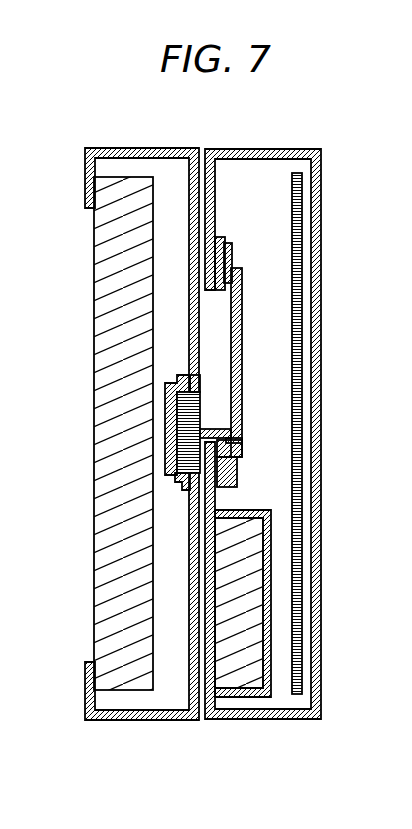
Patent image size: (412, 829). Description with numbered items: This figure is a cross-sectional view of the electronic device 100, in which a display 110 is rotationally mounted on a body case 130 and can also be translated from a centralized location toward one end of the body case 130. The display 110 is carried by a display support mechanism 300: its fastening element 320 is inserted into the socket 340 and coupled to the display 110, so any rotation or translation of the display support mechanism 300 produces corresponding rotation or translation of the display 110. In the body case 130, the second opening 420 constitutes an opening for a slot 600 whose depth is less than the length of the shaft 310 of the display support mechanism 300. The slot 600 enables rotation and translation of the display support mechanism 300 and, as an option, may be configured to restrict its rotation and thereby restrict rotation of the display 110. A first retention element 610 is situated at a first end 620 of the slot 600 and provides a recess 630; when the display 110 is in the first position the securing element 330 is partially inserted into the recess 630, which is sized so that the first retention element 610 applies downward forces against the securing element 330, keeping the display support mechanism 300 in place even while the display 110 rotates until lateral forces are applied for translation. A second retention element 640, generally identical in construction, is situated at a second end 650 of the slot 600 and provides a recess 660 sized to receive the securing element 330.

The electronic device 100 is at (218, 748).
The display 110 is at (135, 147).
The body case 130 is at (299, 148).
The display support mechanism 300 is at (186, 390).
The shaft 310 is at (205, 416).
The fastening element 320 is at (176, 478).
The securing element 330 is at (233, 439).
The socket 340 is at (176, 427).
The second opening 420 is at (205, 340).
The slot 600 is at (228, 333).
The first retention element 610 is at (237, 469).
The first end 620 is at (222, 414).
The recess 630 is at (235, 462).
The second retention element 640 is at (220, 262).
The second end 650 is at (232, 313).
The recess 660 is at (234, 267).